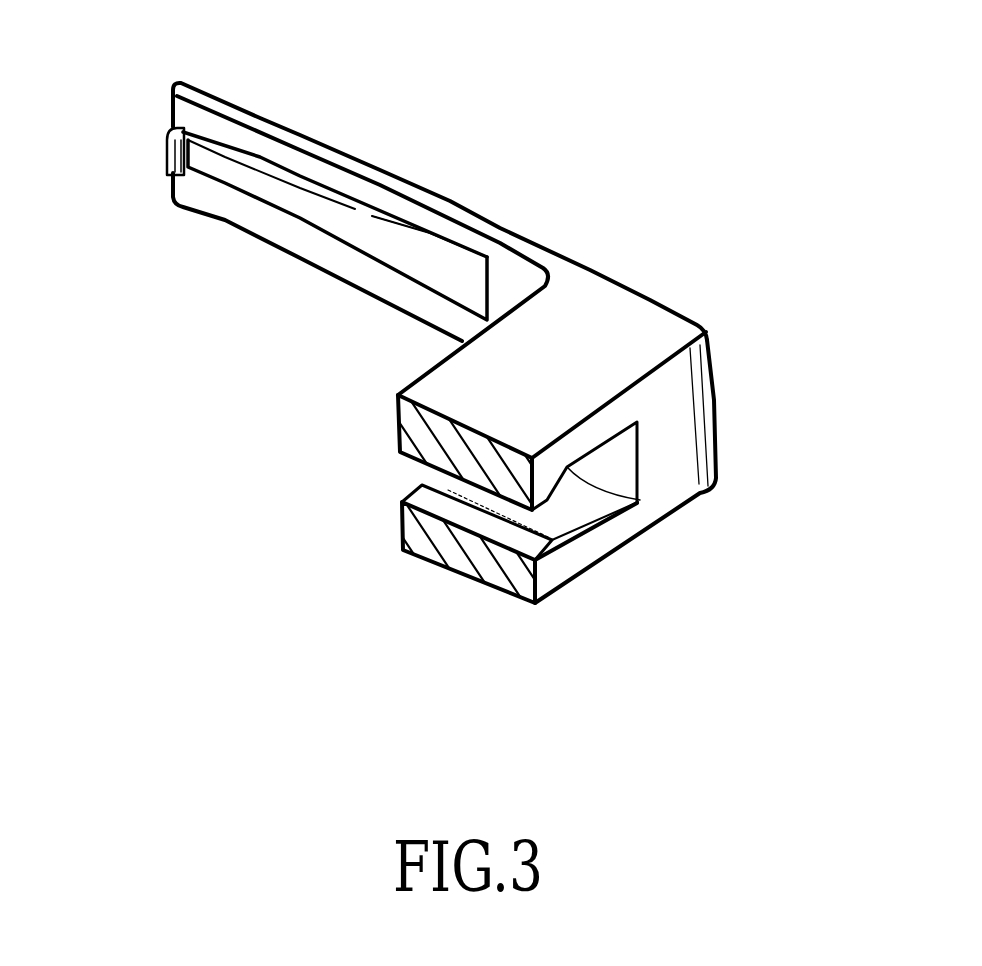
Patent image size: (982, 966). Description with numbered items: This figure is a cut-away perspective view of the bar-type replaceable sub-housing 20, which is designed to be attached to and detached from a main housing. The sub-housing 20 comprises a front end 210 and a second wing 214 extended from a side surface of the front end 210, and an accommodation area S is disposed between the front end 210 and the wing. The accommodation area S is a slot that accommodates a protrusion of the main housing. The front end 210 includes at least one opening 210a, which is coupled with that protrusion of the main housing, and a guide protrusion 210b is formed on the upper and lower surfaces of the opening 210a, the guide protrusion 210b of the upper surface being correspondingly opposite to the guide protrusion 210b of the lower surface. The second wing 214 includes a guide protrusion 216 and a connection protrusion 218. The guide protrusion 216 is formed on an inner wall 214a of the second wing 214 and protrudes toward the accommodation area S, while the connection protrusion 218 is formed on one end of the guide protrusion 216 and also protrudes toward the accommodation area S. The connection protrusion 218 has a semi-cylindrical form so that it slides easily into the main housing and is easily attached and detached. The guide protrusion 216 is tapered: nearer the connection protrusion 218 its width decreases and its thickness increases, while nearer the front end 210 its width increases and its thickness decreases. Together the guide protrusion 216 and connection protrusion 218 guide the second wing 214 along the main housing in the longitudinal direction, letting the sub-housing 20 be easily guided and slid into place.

The sub-housing 20 is at (429, 325).
The front end 210 is at (581, 394).
The opening 210a is at (643, 500).
The guide protrusion 210b is at (589, 538).
The second wing 214 is at (415, 195).
The inner wall 214a is at (234, 133).
The guide protrusion 216 is at (308, 207).
The connection protrusion 218 is at (165, 132).
The accommodation area S is at (400, 337).